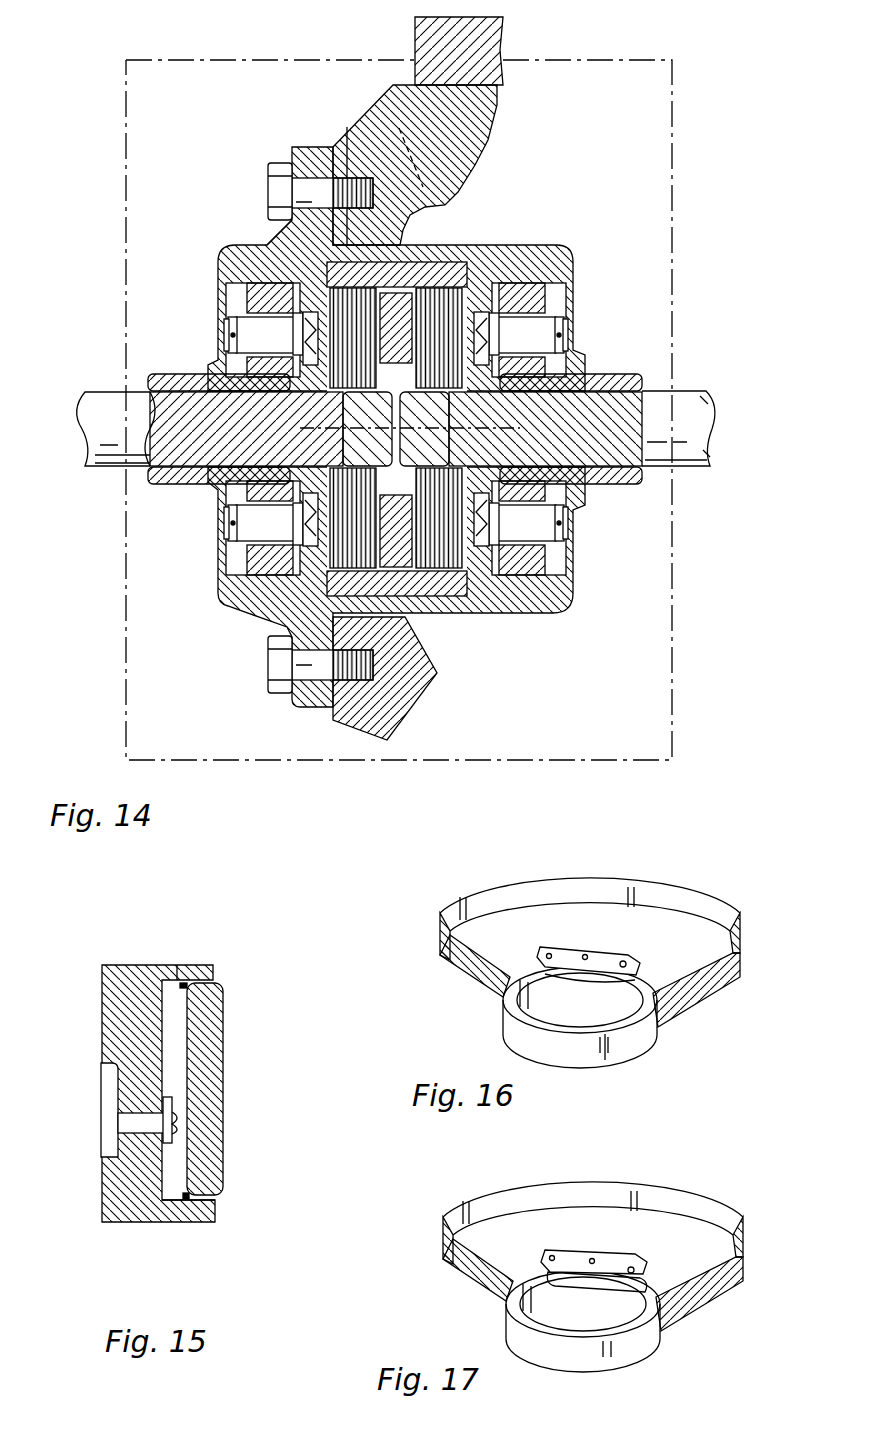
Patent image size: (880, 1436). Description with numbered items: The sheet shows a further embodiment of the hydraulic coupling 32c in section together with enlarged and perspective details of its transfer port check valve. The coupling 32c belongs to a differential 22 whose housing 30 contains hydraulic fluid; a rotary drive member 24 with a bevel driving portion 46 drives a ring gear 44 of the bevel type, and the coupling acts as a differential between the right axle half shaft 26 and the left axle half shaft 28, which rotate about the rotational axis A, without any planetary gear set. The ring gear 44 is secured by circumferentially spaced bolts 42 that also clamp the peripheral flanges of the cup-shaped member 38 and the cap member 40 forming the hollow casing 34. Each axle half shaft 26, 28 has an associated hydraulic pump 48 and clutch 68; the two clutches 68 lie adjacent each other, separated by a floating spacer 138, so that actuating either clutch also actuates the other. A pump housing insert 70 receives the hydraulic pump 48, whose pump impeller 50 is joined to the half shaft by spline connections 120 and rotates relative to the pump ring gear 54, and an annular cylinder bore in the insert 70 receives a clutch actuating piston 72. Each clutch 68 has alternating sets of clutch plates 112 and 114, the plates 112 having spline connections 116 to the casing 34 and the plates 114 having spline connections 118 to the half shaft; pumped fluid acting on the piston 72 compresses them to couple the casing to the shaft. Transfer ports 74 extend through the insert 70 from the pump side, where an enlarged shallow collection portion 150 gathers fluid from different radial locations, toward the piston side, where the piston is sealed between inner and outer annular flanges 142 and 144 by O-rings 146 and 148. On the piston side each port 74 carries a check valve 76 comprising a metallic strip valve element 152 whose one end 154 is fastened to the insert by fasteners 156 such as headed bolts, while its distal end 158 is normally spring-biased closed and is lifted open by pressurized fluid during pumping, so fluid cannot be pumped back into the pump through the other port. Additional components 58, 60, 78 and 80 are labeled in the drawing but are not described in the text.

In FIG. 14, the differential 22 is at (116, 58).
In FIG. 14, the rotary drive member 24 is at (415, 33).
In FIG. 14, the right axle half shaft 26 is at (700, 463).
In FIG. 14, the left axle half shaft 28 is at (100, 457).
In FIG. 14, the housing 30 is at (672, 207).
In FIG. 14, the hydraulic coupling 32c is at (220, 614).
In FIG. 14, the casing 34 is at (548, 622).
In FIG. 14, the cup-shaped member 38 is at (587, 618).
In FIG. 14, the cap member 40 is at (237, 248).
In FIG. 14, the bolts 42 is at (274, 168).
In FIG. 14, the ring gear 44 is at (358, 142).
In FIG. 14, the bevel driving portion 46 is at (430, 173).
In FIG. 14, the hydraulic pump 48 is at (247, 296).
In FIG. 14, the pump impeller 50 is at (396, 429).
In FIG. 14, the ring gear 54 is at (216, 263).
In FIG. 14, the snap ring 58 is at (226, 322).
In FIG. 14, the washer 60 is at (232, 338).
In FIG. 14, the clutch 68 is at (440, 625).
In FIG. 14, the pump housing insert 70 is at (287, 230).
In FIG. 15, the pump housing insert 70 is at (147, 965).
In FIG. 16, the pump housing insert 70 is at (464, 891).
In FIG. 17, the pump housing insert 70 is at (491, 1189).
In FIG. 14, the clutch actuating piston 72 is at (410, 443).
In FIG. 15, the clutch actuating piston 72 is at (228, 995).
In FIG. 14, the transfer ports 74 is at (590, 628).
In FIG. 15, the transfer ports 74 is at (125, 1125).
In FIG. 16, the transfer ports 74 is at (677, 910).
In FIG. 17, the transfer ports 74 is at (633, 1268).
In FIG. 14, the check valve 76 is at (303, 332).
In FIG. 15, the check valve 76 is at (183, 1112).
In FIG. 16, the check valve 76 is at (620, 948).
In FIG. 17, the check valve 76 is at (608, 1240).
In FIG. 14, the bearing 78 is at (395, 418).
In FIG. 14, the bearing race 80 is at (393, 418).
In FIG. 14, the clutch plates 112 is at (372, 262).
In FIG. 14, the clutch plates 114 is at (395, 429).
In FIG. 14, the spline connections 116 is at (408, 262).
In FIG. 14, the spline connections 118 is at (396, 445).
In FIG. 14, the spline connections 120 is at (395, 429).
In FIG. 14, the floating spacer 138 is at (490, 262).
In FIG. 15, the inner annular flange 142 is at (215, 1210).
In FIG. 16, the inner annular flange 142 is at (512, 1011).
In FIG. 17, the inner annular flange 142 is at (661, 1332).
In FIG. 15, the outer annular flange 144 is at (205, 965).
In FIG. 16, the outer annular flange 144 is at (512, 895).
In FIG. 17, the outer annular flange 144 is at (737, 1232).
In FIG. 15, the O-ring 146 is at (183, 1203).
In FIG. 15, the O-ring 148 is at (180, 965).
In FIG. 15, the collection portion 150 is at (103, 1085).
In FIG. 15, the strip valve element 152 is at (172, 1140).
In FIG. 16, the strip valve element 152 is at (597, 1002).
In FIG. 17, the strip valve element 152 is at (625, 1313).
In FIG. 16, the mounted end 154 is at (548, 954).
In FIG. 17, the mounted end 154 is at (545, 1268).
In FIG. 16, the fasteners 156 is at (580, 974).
In FIG. 17, the fasteners 156 is at (592, 1258).
In FIG. 16, the distal end 158 is at (688, 1005).
In FIG. 17, the distal end 158 is at (635, 1256).
In FIG. 14, the rotational axis A is at (307, 434).